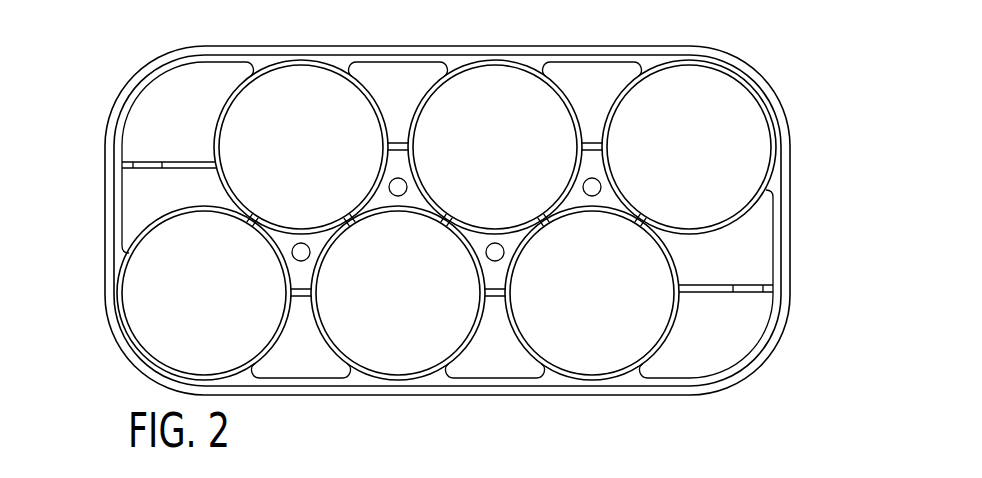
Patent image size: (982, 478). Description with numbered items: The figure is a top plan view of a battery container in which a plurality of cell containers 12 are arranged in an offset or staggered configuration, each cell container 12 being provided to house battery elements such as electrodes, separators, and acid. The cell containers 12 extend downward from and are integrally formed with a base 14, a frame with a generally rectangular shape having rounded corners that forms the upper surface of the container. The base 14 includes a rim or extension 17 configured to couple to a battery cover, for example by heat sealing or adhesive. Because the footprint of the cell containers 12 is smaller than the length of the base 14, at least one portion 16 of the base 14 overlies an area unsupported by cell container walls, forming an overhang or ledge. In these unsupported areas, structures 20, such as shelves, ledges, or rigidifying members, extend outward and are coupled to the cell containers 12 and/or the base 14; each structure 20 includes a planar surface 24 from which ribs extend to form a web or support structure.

The cell containers 12 is at (604, 302).
The base 14 is at (725, 55).
The portion of base 16 is at (124, 74).
The rim 17 is at (528, 47).
The structures 20 is at (174, 85).
The planar surface 24 is at (221, 75).